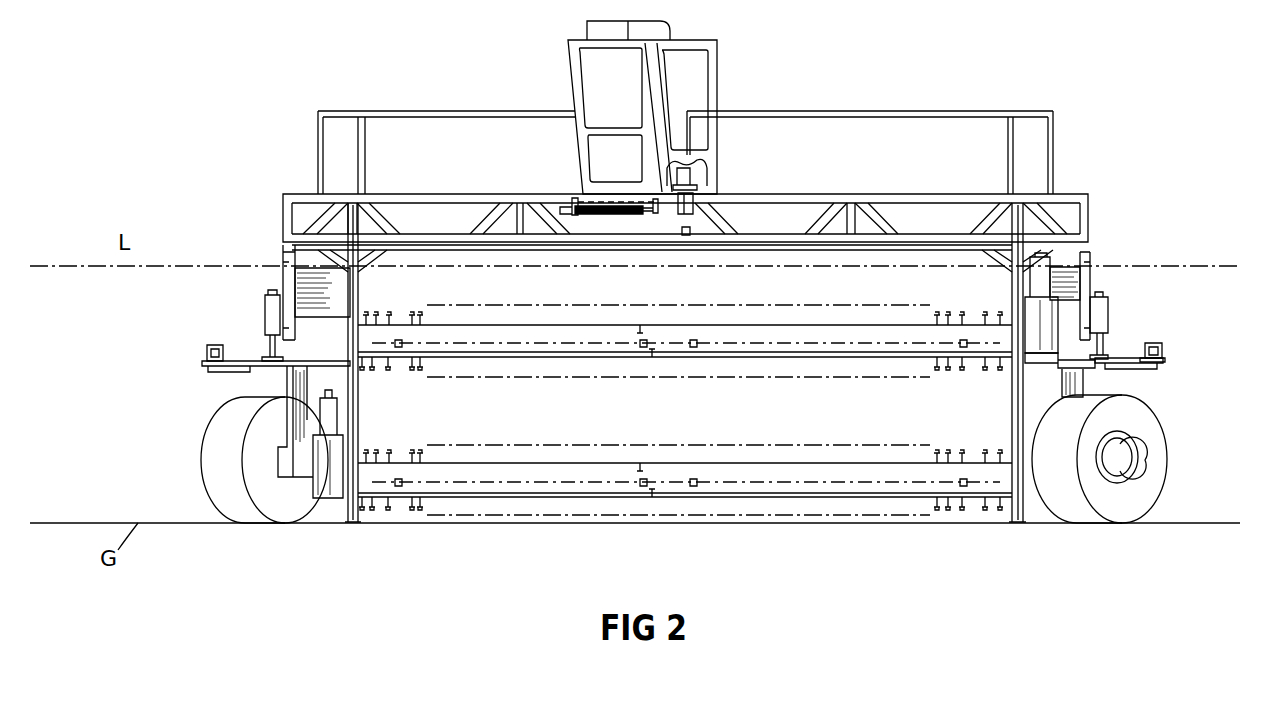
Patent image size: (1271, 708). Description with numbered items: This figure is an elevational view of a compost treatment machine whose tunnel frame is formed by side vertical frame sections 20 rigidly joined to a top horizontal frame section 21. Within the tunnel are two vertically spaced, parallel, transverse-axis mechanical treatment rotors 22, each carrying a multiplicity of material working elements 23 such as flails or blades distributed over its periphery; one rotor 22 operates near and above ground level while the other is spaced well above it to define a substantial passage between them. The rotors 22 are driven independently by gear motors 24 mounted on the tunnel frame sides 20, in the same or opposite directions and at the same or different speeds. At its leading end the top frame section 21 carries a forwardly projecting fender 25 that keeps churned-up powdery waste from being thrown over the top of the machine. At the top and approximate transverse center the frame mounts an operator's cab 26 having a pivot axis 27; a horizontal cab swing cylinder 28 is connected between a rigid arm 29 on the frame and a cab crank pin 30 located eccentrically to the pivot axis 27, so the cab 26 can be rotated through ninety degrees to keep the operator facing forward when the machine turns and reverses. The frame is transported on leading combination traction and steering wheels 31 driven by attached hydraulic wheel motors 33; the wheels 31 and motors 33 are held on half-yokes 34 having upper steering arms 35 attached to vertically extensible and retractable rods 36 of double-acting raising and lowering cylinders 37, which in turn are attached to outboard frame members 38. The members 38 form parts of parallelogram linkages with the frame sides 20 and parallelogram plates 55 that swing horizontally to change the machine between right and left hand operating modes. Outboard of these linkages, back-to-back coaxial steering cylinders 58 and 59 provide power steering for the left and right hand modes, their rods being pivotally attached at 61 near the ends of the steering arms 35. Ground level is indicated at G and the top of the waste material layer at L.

The side vertical frame sections 20 is at (358, 420).
The top horizontal frame section 21 is at (776, 240).
The mechanical treatment rotors 22 is at (808, 355).
The material working elements 23 is at (640, 322).
The gear motors 24 is at (326, 425).
The fender 25 is at (430, 242).
The operator's cab 26 is at (700, 76).
The pivot axis 27 is at (700, 202).
The cab swing cylinder 28 is at (604, 246).
The rigid arm 29 is at (566, 200).
The cab crank pin 30 is at (660, 208).
The combination traction and steering wheels 31 is at (246, 508).
The hydraulic wheel motors 33 is at (1142, 456).
The half-yokes 34 is at (300, 415).
The upper steering arms 35 is at (240, 372).
The rods 36 is at (272, 346).
The raising and lowering cylinders 37 is at (266, 310).
The outboard frame members 38 is at (286, 276).
The parallelogram plates 55 is at (336, 296).
The left hand mode steering cylinder 58 is at (205, 350).
The right hand mode steering cylinder 59 is at (1158, 358).
The pivotal attachment 61 is at (206, 358).